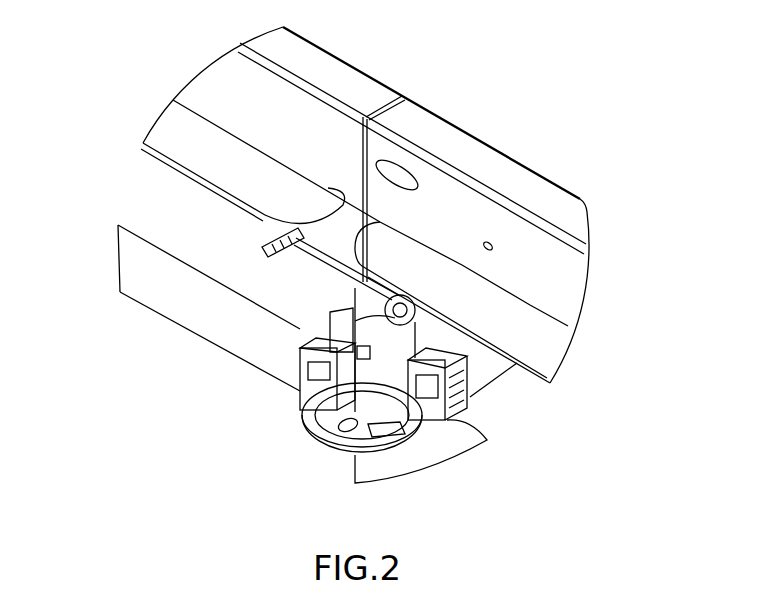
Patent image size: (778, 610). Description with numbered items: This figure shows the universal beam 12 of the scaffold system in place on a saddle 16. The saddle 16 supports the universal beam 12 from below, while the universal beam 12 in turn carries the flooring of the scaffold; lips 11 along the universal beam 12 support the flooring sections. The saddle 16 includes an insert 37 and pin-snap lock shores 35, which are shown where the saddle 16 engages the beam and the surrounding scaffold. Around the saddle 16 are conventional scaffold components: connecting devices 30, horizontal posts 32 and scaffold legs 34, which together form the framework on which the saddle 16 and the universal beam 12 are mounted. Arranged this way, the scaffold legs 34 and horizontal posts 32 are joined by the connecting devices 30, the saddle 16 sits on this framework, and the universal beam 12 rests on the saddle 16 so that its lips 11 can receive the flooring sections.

The lips 11 is at (173, 127).
The universal beam 12 is at (200, 70).
The saddle 16 is at (318, 252).
The connecting devices 30 is at (335, 418).
The horizontal posts 32 is at (153, 313).
The scaffold legs 34 is at (377, 475).
The pin-snap lock shores 35 is at (270, 250).
The insert 37 is at (467, 395).